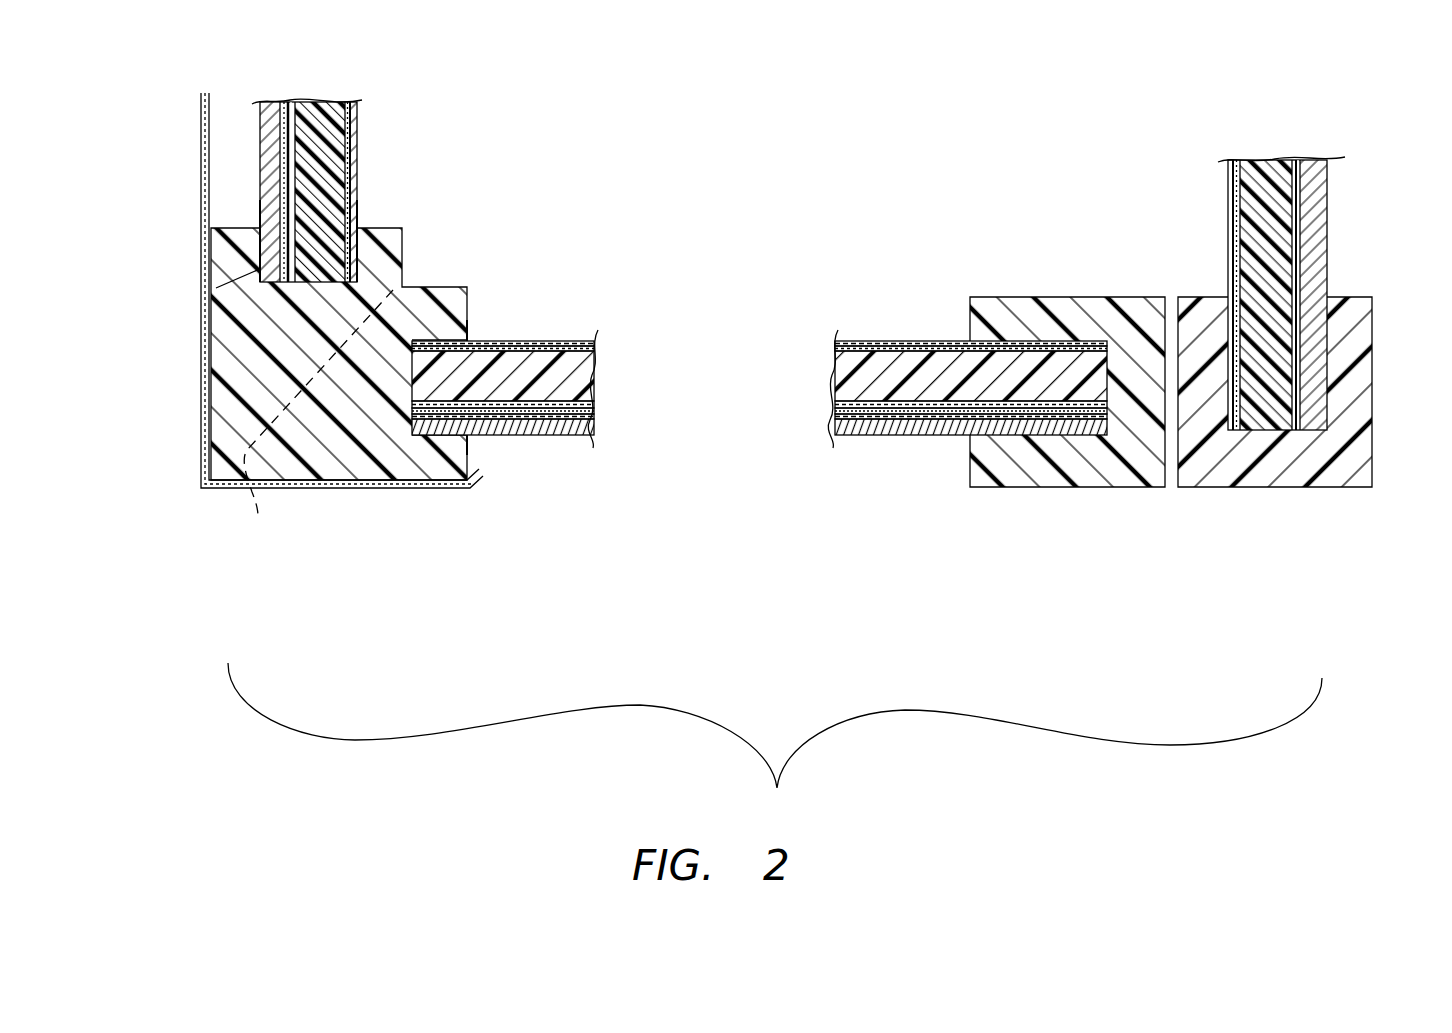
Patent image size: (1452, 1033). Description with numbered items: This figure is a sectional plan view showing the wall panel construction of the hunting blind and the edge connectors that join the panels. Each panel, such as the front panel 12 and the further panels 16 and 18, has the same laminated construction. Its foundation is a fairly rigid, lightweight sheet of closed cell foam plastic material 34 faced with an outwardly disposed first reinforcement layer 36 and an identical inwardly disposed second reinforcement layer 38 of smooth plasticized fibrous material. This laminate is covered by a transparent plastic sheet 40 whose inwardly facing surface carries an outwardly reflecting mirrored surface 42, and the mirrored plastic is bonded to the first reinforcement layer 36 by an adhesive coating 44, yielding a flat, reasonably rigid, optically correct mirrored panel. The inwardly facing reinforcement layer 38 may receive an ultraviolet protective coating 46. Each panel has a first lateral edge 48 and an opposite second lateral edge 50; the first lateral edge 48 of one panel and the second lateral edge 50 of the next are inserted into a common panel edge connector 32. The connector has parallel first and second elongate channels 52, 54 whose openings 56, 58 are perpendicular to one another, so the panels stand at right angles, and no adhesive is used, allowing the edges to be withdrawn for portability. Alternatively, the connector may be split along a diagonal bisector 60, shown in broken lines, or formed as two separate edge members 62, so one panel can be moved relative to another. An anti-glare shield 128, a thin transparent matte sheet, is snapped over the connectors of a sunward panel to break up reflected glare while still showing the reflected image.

The front panel 12 is at (759, 417).
The panel 16 is at (379, 128).
The panel 18 is at (1340, 260).
The panel edge connector 32 is at (428, 273).
The closed cell foam plastic material 34 is at (835, 376).
The first reinforcement layer 36 is at (594, 401).
The second reinforcement layer 38 is at (835, 348).
The transparent plastic sheet 40 is at (594, 427).
The mirrored surface 42 is at (835, 416).
The adhesive coating 44 is at (835, 411).
The ultraviolet protective coating 46 is at (594, 343).
The first lateral edge 48 is at (1255, 431).
The second lateral edge 50 is at (1082, 436).
The first elongate channel 52 is at (470, 436).
The second elongate channel 54 is at (260, 222).
The opening 56 is at (470, 340).
The opening 58 is at (358, 226).
The diagonal bisector 60 is at (262, 520).
The edge member 62 is at (1188, 296).
The anti-glare shield 128 is at (203, 455).